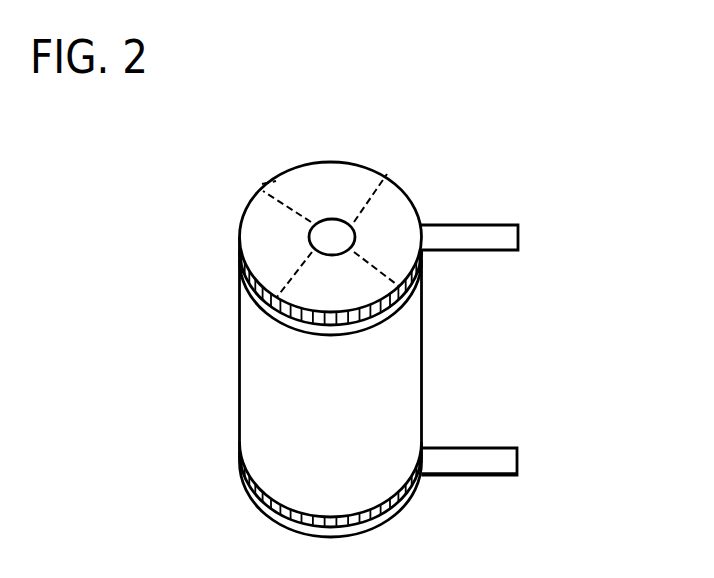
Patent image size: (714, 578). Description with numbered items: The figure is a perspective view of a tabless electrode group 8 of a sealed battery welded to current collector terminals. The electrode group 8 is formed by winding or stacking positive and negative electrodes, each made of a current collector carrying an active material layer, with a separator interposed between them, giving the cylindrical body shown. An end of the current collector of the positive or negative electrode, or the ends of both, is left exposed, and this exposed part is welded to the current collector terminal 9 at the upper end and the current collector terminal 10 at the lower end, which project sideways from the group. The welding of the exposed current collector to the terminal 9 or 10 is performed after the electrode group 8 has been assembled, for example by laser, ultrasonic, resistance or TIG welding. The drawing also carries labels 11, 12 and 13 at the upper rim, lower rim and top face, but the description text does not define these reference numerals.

The electrode group 8 is at (347, 413).
The positive/negative electrode current collector terminal 9 is at (389, 228).
The positive/negative electrode current collector terminal 10 is at (494, 463).
The upper rim band 11 is at (425, 290).
The lower rim band 12 is at (393, 513).
The top plate with opening 13 is at (290, 206).